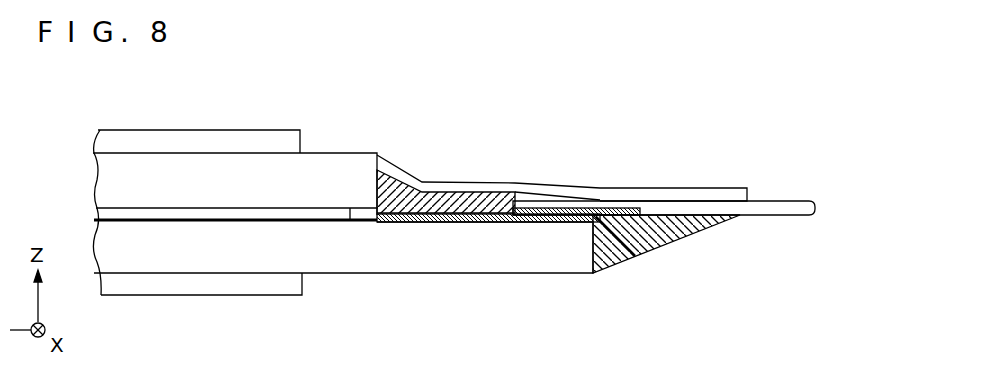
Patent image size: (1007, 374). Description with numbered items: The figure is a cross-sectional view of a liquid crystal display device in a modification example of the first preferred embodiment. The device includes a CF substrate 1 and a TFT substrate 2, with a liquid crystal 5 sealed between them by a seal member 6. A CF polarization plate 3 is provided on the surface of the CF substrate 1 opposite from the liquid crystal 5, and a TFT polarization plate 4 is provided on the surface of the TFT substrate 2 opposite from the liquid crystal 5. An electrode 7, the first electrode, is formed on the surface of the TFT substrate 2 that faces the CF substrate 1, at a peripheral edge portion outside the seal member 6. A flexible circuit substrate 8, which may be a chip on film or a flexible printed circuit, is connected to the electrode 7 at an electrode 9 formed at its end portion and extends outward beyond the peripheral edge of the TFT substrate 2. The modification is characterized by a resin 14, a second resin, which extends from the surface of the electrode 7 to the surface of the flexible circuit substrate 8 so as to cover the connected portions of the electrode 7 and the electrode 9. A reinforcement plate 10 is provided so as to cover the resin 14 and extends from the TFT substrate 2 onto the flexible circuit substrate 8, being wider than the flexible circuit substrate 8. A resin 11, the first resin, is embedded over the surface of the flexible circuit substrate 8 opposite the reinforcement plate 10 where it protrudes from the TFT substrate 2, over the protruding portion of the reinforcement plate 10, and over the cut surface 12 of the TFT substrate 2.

The CF substrate 1 is at (328, 184).
The TFT substrate 2 is at (238, 248).
The CF polarization plate 3 is at (209, 149).
The TFT polarization plate 4 is at (148, 283).
The liquid crystal 5 is at (327, 218).
The seal member 6 is at (365, 218).
The electrode 7 is at (470, 224).
The flexible circuit substrate 8 is at (762, 216).
The electrode 9 is at (557, 216).
The reinforcement plate 10 is at (615, 194).
The resin 11 is at (657, 232).
The cut surface 12 is at (594, 246).
The resin 14 is at (467, 190).